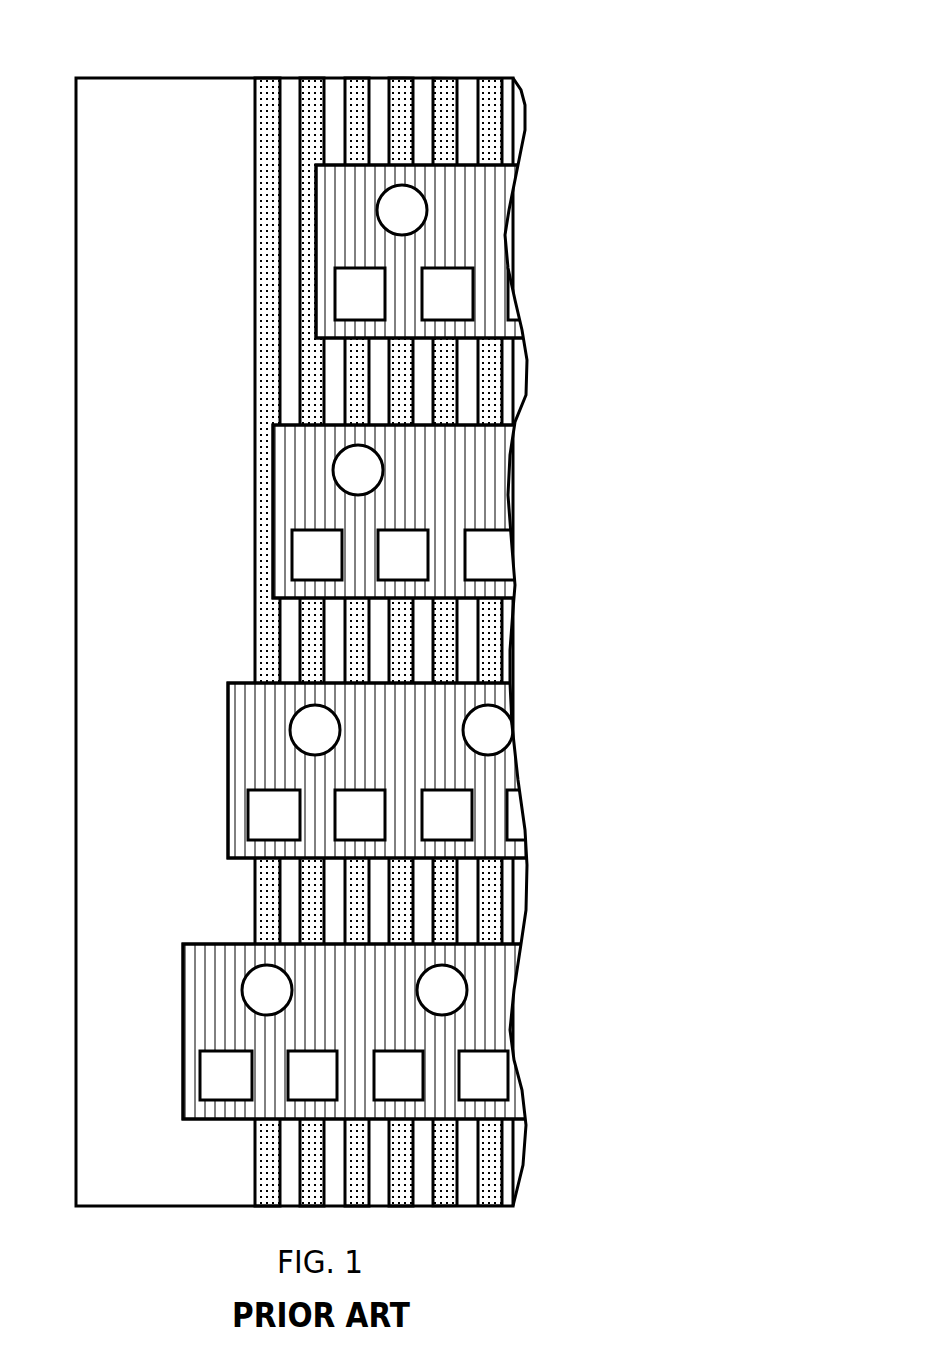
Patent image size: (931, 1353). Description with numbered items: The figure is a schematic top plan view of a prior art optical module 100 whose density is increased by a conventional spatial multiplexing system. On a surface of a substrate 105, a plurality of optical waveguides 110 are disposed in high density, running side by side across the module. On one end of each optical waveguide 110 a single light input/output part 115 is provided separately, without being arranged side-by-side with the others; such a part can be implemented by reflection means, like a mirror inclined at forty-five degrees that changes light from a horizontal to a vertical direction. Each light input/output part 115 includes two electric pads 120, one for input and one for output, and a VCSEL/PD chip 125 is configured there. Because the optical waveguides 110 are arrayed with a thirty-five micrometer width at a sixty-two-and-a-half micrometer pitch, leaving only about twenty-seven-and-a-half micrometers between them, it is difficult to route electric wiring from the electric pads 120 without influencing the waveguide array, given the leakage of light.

The optical module 100 is at (708, 100).
The substrate 105 is at (137, 78).
The optical waveguides 110 is at (378, 642).
The light input/output part 115 is at (377, 600).
The electric pads 120 is at (379, 684).
The VCSEL/PD chip 125 is at (505, 238).